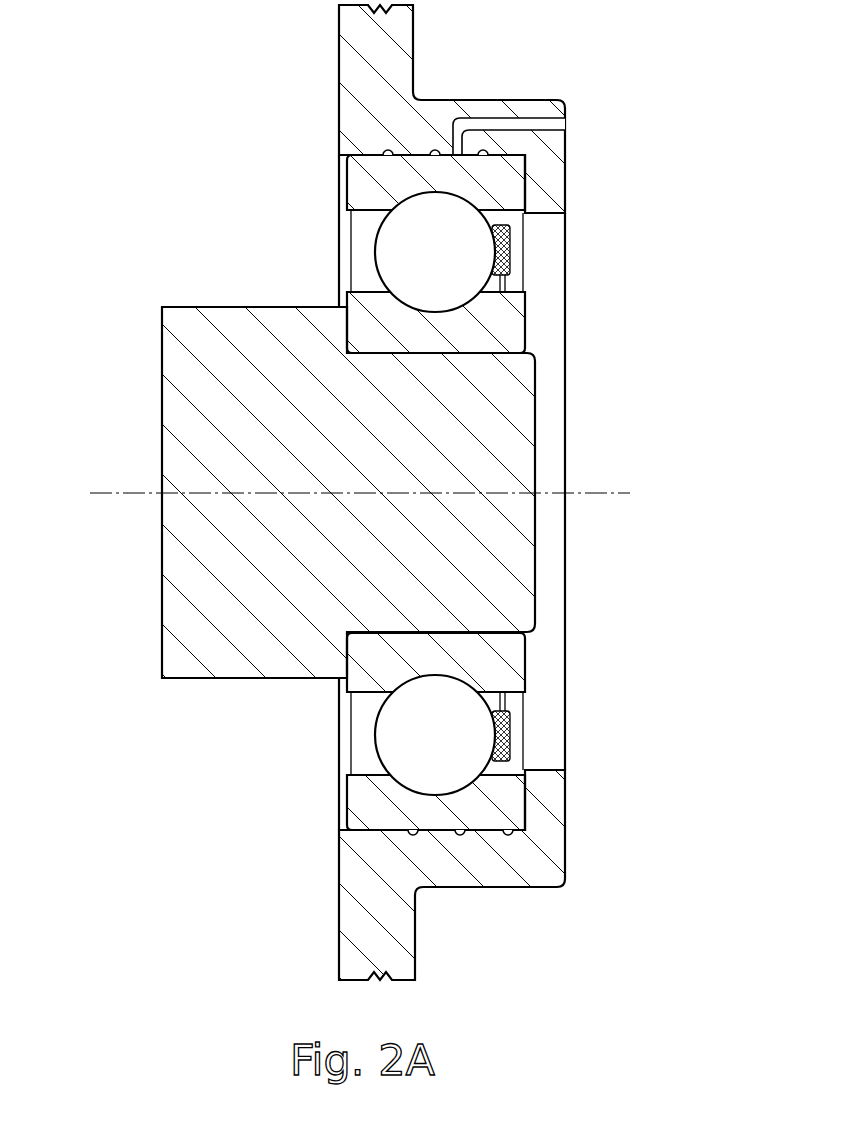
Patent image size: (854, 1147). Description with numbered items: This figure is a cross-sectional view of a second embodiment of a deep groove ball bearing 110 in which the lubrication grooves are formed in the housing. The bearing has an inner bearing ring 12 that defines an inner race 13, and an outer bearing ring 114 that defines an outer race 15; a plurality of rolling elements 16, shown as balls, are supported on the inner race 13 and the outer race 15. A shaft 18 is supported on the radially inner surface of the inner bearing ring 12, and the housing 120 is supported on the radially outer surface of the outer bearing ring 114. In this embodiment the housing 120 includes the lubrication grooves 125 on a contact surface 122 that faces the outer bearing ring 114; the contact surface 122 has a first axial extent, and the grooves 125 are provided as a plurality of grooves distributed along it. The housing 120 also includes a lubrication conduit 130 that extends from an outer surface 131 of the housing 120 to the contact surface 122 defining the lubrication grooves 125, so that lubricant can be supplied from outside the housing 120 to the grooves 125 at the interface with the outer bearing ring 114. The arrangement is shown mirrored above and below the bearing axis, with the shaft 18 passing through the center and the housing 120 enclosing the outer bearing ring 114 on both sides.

The inner bearing ring 12 is at (439, 708).
The inner race 13 is at (478, 675).
The outer race 15 is at (497, 808).
The rolling elements 16 is at (397, 253).
The shaft 18 is at (175, 376).
The deep groove ball bearing 110 is at (464, 492).
The outer bearing ring 114 is at (375, 813).
The housing 120 is at (356, 68).
The contact surface 122 is at (360, 167).
The lubrication grooves 125 is at (389, 153).
The lubrication conduit 130 is at (533, 121).
The outer surface 131 is at (567, 850).